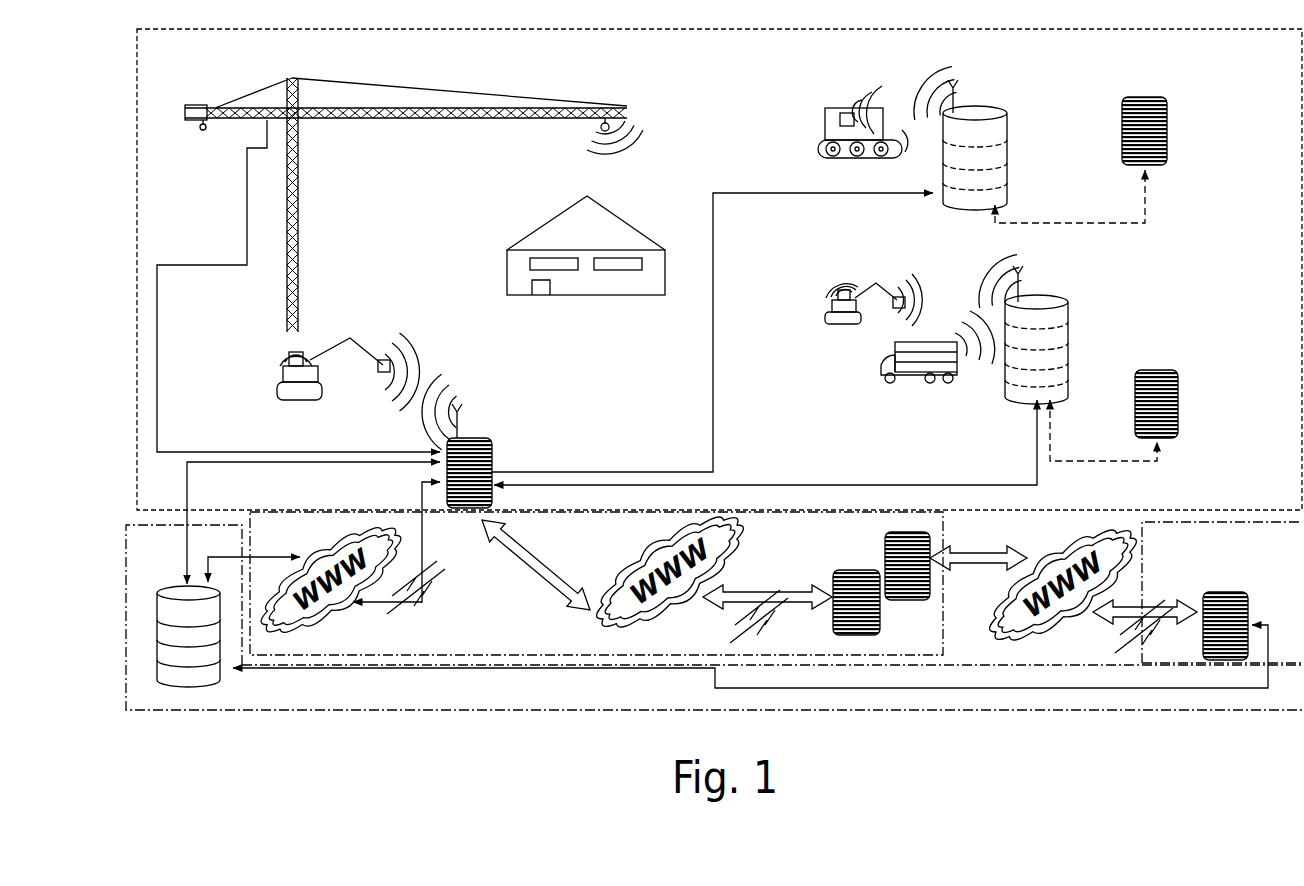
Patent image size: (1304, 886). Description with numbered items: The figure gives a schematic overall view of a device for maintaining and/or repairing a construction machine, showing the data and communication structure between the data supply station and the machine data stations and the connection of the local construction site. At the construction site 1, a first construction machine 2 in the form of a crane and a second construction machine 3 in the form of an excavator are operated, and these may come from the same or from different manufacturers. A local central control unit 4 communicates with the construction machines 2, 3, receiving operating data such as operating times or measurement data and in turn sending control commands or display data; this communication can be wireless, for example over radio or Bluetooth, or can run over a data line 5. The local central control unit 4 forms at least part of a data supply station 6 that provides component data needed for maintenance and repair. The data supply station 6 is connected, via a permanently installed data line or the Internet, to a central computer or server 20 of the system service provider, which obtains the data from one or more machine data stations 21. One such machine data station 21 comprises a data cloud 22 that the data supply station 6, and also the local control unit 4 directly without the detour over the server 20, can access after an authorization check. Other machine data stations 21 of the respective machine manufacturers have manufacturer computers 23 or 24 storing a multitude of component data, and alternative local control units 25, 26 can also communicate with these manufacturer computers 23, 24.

The construction site 1 is at (508, 240).
The first construction machine 2 is at (499, 104).
The second construction machine 3 is at (299, 225).
The local central control unit 4 is at (478, 432).
The data line 5 is at (201, 266).
The data supply station 6 is at (195, 683).
The central computer or server 20 is at (205, 684).
The machine data station 21 is at (1022, 333).
The data cloud 22 is at (855, 570).
The manufacturer computer 23 is at (1004, 194).
The manufacturer computer 24 is at (1066, 380).
The alternative local control unit 25 is at (1168, 127).
The alternative local control unit 26 is at (1180, 370).